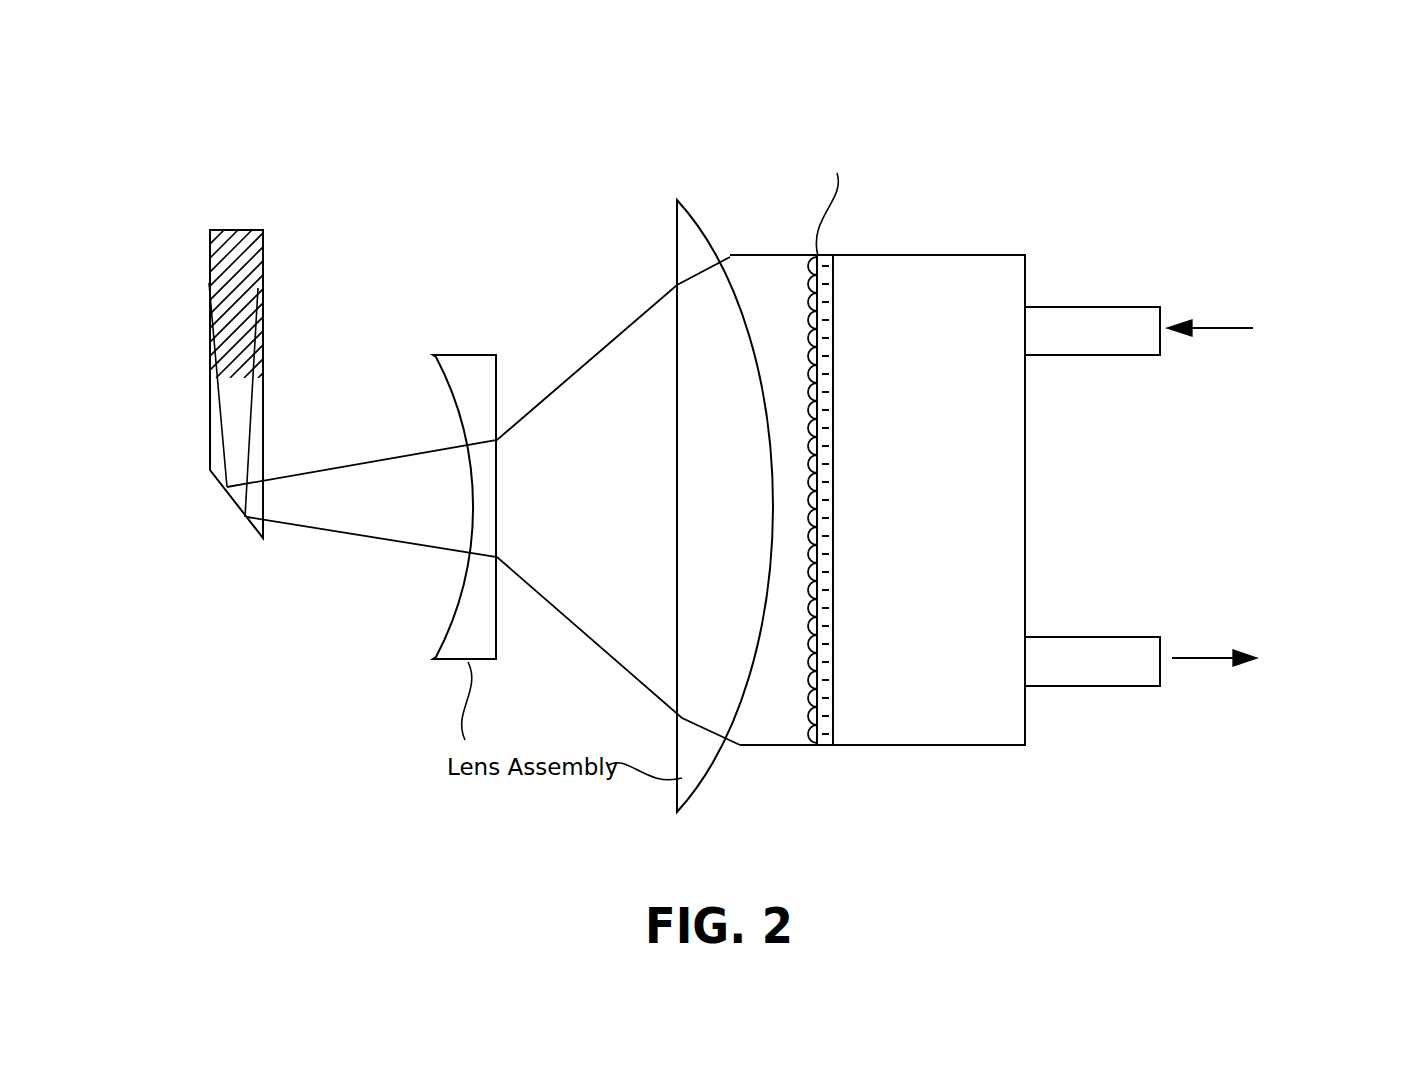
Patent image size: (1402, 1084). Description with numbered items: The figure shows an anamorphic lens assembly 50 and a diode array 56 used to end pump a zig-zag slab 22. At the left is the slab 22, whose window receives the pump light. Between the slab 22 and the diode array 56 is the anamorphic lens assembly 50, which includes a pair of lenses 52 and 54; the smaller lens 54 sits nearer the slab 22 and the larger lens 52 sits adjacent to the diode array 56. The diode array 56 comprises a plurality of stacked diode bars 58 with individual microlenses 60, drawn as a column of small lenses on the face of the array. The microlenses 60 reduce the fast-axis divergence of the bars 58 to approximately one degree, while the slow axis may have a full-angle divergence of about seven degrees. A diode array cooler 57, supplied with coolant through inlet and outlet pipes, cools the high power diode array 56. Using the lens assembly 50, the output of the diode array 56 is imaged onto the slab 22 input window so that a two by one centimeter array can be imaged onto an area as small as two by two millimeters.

The slab 22 is at (210, 308).
The anamorphic lens assembly 50 is at (556, 198).
The lens 52 is at (692, 200).
The lens 54 is at (475, 353).
The diode array 56 is at (1034, 198).
The diode array cooler 57 is at (1158, 240).
The diode bars 58 is at (830, 265).
The microlenses 60 is at (793, 268).